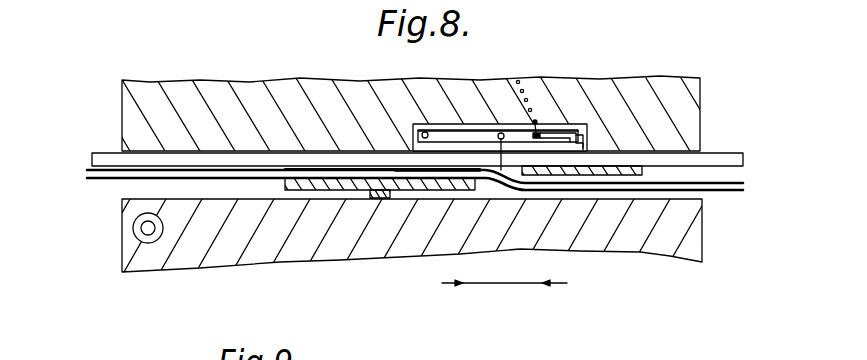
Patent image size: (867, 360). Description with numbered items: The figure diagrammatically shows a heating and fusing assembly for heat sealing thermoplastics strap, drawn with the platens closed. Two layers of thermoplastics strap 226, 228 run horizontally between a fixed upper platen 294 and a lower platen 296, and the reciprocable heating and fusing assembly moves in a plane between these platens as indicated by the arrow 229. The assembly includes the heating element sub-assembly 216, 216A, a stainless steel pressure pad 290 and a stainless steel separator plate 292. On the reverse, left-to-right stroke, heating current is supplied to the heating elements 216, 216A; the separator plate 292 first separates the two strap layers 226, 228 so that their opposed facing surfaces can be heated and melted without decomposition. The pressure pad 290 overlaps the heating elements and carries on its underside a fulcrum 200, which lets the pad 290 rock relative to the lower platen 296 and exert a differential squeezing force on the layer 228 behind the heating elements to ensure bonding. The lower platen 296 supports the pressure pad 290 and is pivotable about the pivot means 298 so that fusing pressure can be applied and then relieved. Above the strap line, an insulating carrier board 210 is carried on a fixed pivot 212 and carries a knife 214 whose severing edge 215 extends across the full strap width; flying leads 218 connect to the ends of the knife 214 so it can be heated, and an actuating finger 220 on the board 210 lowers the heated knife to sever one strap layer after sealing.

The fulcrum 200 is at (373, 198).
The insulating carrier board 210 is at (515, 77).
The fixed pivot 212 is at (437, 170).
The knife 214 is at (553, 131).
The severing edge 215 is at (588, 143).
The heating element 216 is at (403, 168).
The heating element 216A is at (480, 133).
The flying leads 218 is at (515, 77).
The actuating finger 220 is at (497, 187).
The thermoplastics strap layer 226 is at (112, 158).
The thermoplastics strap layer 228 is at (92, 181).
The arrow 229 is at (530, 284).
The pressure pad 290 is at (393, 191).
The separator plate 292 is at (606, 176).
The upper platen 294 is at (271, 108).
The lower platen 296 is at (300, 293).
The pivot means 298 is at (134, 232).